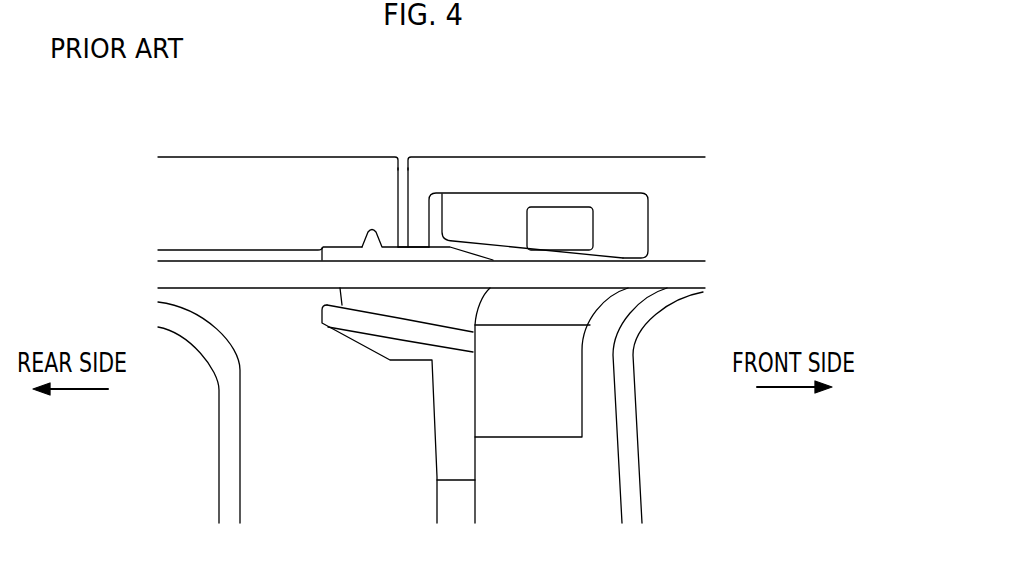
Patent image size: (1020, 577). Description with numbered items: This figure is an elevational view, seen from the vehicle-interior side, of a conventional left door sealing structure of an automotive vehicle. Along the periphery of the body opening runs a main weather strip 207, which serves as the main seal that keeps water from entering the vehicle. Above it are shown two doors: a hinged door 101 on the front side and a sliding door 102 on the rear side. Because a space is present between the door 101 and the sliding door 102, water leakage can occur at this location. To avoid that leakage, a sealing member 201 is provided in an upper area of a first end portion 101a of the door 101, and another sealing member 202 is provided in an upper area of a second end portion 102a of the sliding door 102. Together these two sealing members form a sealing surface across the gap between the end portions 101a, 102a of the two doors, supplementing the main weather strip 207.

The door 101 is at (620, 157).
The first end portion 101a is at (422, 157).
The sliding door 102 is at (236, 157).
The second end portion 102a is at (397, 157).
The sealing member 201 is at (469, 241).
The sealing member 202 is at (417, 246).
The main weather strip 207 is at (693, 276).